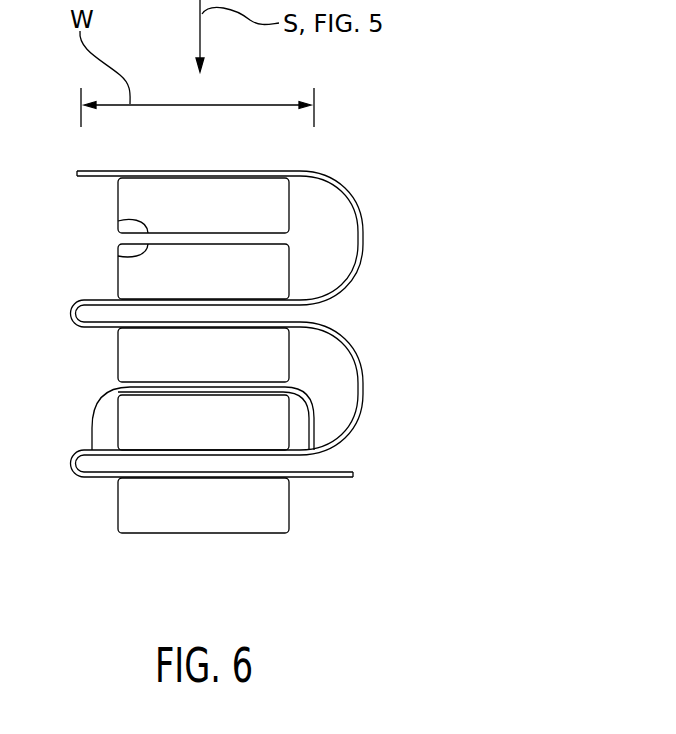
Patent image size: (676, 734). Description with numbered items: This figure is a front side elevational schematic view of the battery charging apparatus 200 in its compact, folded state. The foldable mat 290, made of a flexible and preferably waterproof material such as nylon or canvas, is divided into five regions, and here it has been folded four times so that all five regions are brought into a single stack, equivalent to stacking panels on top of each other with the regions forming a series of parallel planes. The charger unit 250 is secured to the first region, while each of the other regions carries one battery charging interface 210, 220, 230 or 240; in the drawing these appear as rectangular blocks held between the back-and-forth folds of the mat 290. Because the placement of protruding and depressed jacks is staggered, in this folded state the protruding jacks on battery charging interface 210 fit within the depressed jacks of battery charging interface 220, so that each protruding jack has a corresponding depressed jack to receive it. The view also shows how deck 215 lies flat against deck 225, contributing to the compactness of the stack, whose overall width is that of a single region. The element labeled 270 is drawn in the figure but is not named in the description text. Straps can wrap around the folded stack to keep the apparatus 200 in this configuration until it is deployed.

The battery charging apparatus 200 is at (404, 461).
The battery charging interface 210 is at (176, 221).
The deck 215 is at (118, 223).
The battery charging interface 220 is at (176, 291).
The deck 225 is at (118, 255).
The battery charging interface 230 is at (176, 368).
The battery charging interface 240 is at (176, 441).
The charger unit 250 is at (176, 521).
The encapsulant 270 is at (95, 420).
The foldable mat 290 is at (348, 193).